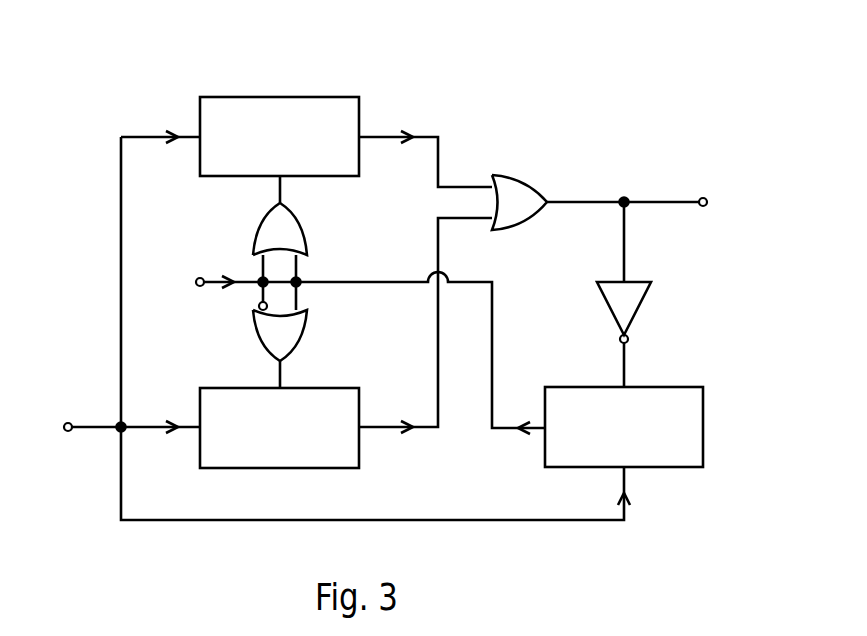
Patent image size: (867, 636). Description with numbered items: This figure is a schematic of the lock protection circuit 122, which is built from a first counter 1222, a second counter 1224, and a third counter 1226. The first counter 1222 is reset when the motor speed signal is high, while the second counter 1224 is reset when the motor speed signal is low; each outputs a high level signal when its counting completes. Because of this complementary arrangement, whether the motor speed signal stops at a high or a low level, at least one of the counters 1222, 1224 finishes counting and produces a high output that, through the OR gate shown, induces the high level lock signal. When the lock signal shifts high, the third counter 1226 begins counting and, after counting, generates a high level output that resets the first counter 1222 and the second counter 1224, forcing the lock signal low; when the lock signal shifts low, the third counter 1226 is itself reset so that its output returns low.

The lock protection circuit 122 is at (657, 105).
The first counter 1222 is at (333, 97).
The second counter 1224 is at (333, 388).
The third counter 1226 is at (677, 387).